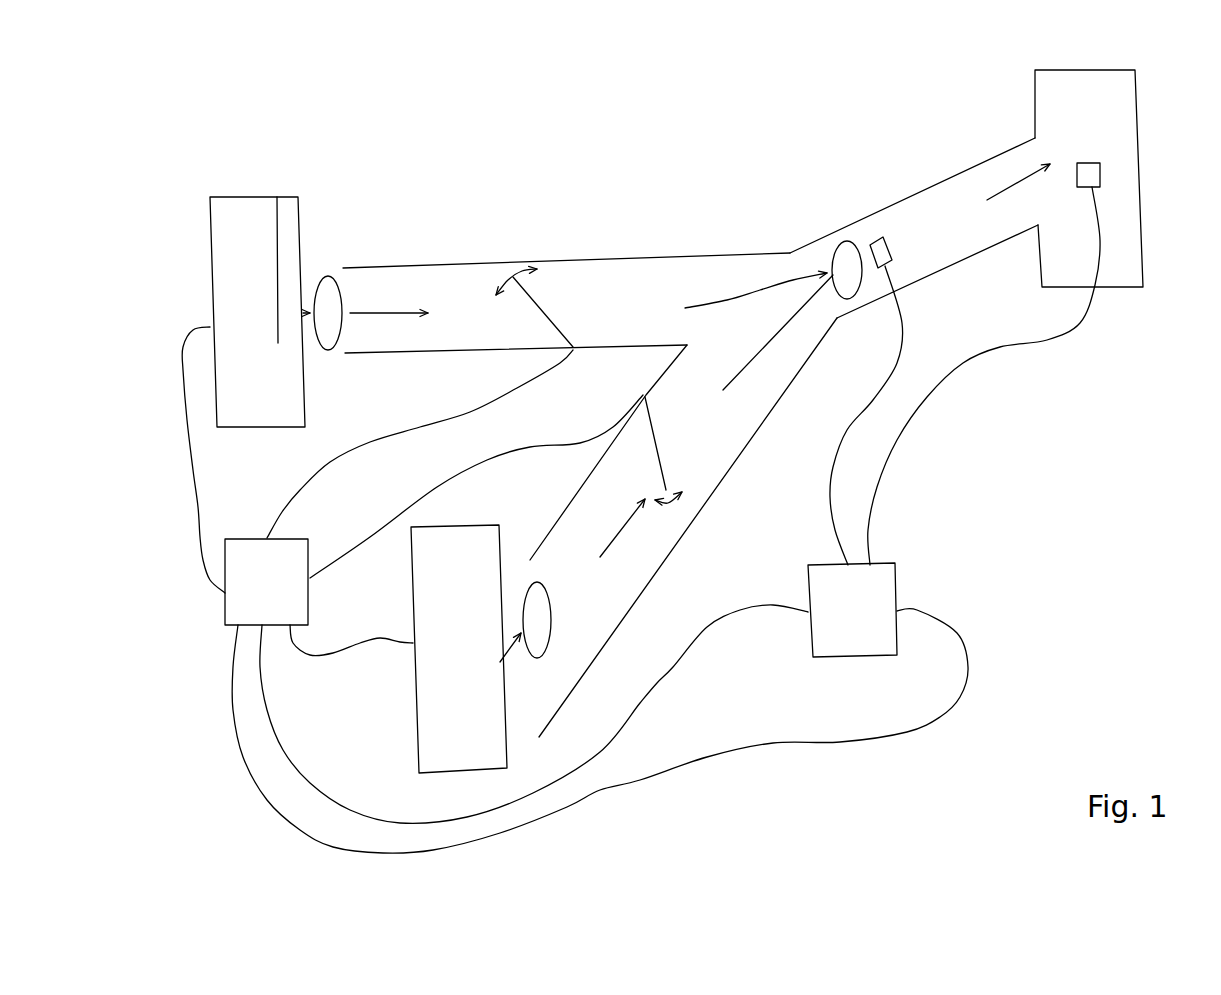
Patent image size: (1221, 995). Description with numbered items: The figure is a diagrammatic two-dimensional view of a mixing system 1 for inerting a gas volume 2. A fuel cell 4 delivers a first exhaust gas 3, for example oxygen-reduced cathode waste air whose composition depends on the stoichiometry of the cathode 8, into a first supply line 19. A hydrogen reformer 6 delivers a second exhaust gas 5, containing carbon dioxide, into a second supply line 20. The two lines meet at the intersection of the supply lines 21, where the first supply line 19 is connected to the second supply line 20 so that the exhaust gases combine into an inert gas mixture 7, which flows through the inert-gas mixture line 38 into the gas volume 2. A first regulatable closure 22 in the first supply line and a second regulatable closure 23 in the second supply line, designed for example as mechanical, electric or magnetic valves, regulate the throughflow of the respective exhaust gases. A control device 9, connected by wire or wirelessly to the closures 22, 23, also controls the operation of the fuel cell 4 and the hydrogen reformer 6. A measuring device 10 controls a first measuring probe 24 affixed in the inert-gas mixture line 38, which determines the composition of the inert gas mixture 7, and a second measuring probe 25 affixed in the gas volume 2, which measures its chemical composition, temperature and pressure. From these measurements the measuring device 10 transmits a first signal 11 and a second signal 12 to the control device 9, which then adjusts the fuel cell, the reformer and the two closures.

The mixing system 1 is at (350, 133).
The gas volume 2 is at (1043, 83).
The first exhaust gas 3 is at (327, 268).
The fuel cell 4 is at (247, 195).
The second exhaust gas 5 is at (552, 613).
The hydrogen reformer 6 is at (413, 740).
The inert gas mixture 7 is at (845, 238).
The cathode 8 is at (280, 220).
The control device 9 is at (227, 612).
The measuring device 10 is at (897, 588).
The first signal 11 is at (658, 683).
The second signal 12 is at (897, 740).
The first supply line 19 is at (650, 253).
The second supply line 20 is at (657, 568).
The intersection of the supply lines 21 is at (733, 253).
The first regulatable closure 22 is at (550, 288).
The second regulatable closure 23 is at (658, 452).
The first measuring probe 24 is at (880, 237).
The second measuring probe 25 is at (1100, 175).
The inert-gas mixture line 38 is at (940, 270).